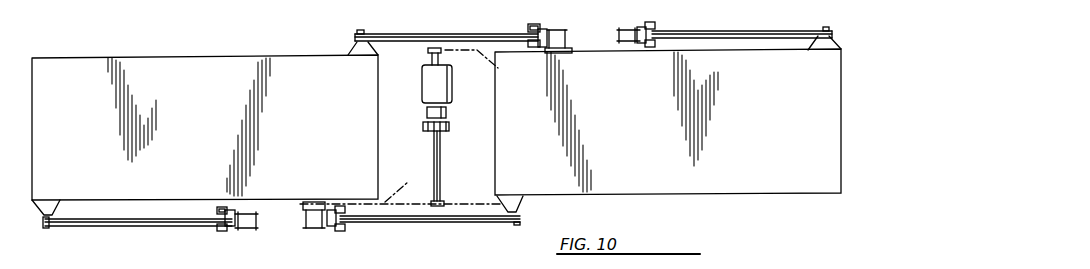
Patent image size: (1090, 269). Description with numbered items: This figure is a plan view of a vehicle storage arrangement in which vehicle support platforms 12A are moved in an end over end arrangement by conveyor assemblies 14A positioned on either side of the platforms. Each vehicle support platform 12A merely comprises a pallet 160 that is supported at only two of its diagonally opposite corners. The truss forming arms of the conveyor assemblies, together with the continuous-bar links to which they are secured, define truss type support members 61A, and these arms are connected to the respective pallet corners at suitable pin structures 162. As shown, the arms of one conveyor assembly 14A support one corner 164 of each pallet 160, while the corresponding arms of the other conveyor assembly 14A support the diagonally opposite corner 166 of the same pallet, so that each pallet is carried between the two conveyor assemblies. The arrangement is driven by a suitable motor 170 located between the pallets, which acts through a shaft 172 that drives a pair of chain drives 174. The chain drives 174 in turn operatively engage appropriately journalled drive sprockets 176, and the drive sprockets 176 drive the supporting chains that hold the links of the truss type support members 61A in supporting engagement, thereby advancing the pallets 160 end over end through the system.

The vehicle support platform 12A is at (62, 90).
The pallet 160 is at (206, 68).
The pin structure 162 is at (362, 55).
The corner 164 is at (520, 189).
The diagonally opposite corner 166 is at (352, 64).
The motor 170 is at (426, 81).
The shaft 172 is at (443, 164).
The chain drive 174 is at (418, 127).
The drive sprocket 176 is at (570, 54).
The conveyor assembly 14A is at (662, 19).
The truss type support member 61A is at (128, 229).